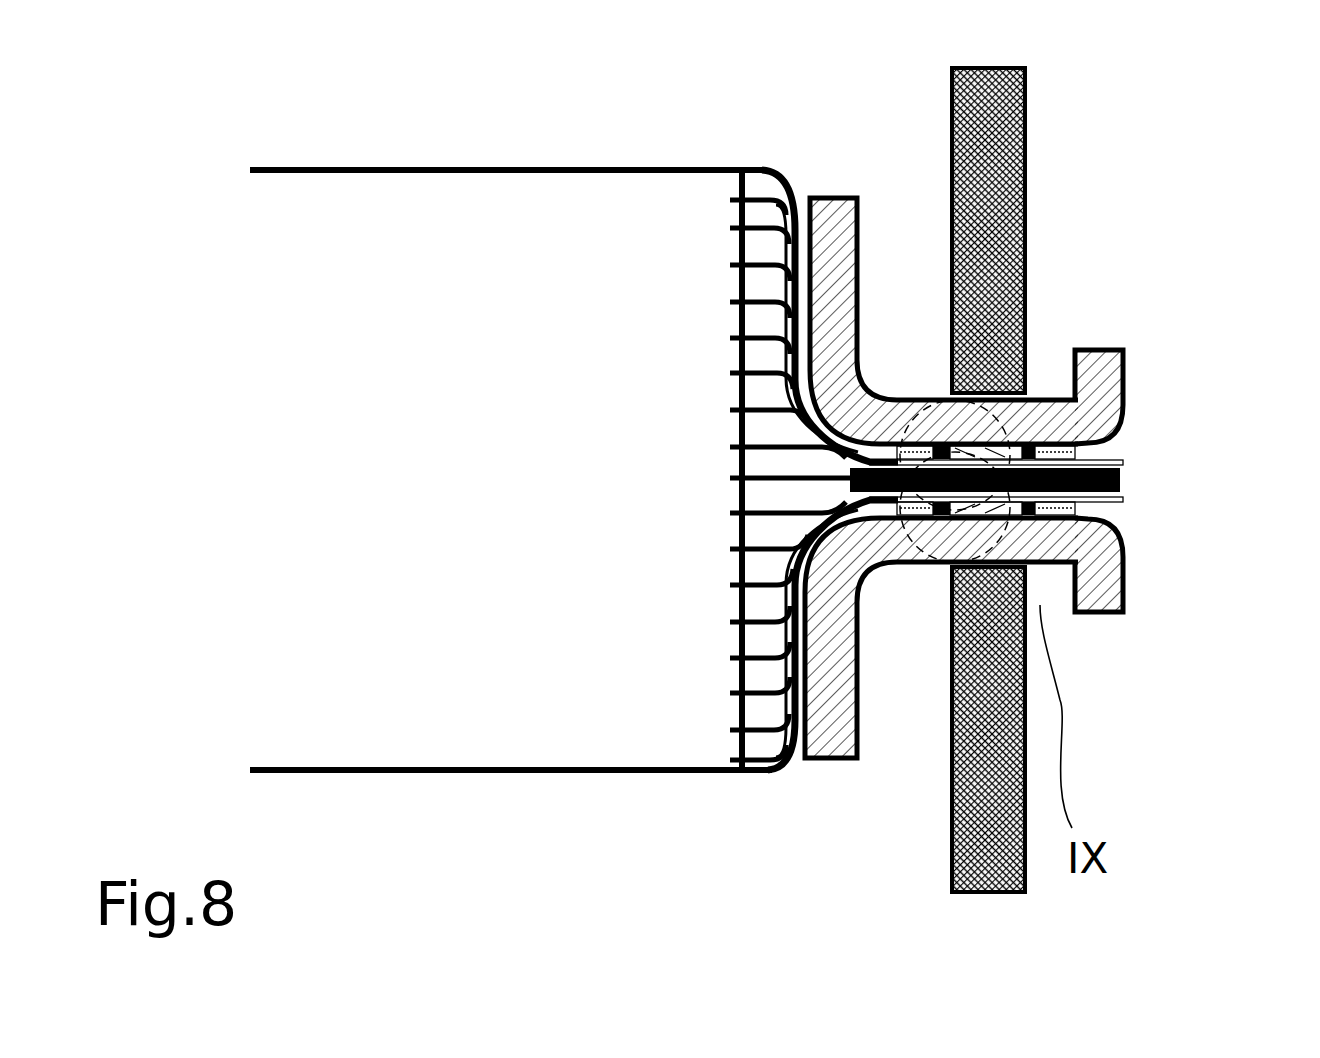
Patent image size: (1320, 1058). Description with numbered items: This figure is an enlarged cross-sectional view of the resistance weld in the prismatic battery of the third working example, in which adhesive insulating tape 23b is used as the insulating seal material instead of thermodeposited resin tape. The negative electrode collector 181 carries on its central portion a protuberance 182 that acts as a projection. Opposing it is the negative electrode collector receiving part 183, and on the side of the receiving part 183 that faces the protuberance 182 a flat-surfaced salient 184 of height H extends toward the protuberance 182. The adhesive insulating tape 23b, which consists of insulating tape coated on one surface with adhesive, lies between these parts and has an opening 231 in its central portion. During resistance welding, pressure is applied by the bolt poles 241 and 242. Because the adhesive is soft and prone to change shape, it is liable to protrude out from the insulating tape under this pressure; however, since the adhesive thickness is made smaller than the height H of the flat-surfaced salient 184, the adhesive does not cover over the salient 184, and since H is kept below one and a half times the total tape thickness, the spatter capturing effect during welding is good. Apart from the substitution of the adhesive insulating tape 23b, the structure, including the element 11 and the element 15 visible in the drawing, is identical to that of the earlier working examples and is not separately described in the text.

The housing 11 is at (336, 727).
The casing / bell portion 15 is at (780, 190).
The negative electrode collector 181 is at (1058, 590).
The protuberance 182 is at (1100, 610).
The negative electrode collector receiving part 183 is at (1107, 350).
The flat-surfaced salient 184 is at (1018, 440).
The opening 231 is at (908, 657).
The adhesive insulating tape 23b is at (1133, 456).
The bolt pole 241 is at (950, 872).
The bolt pole 242 is at (1025, 88).